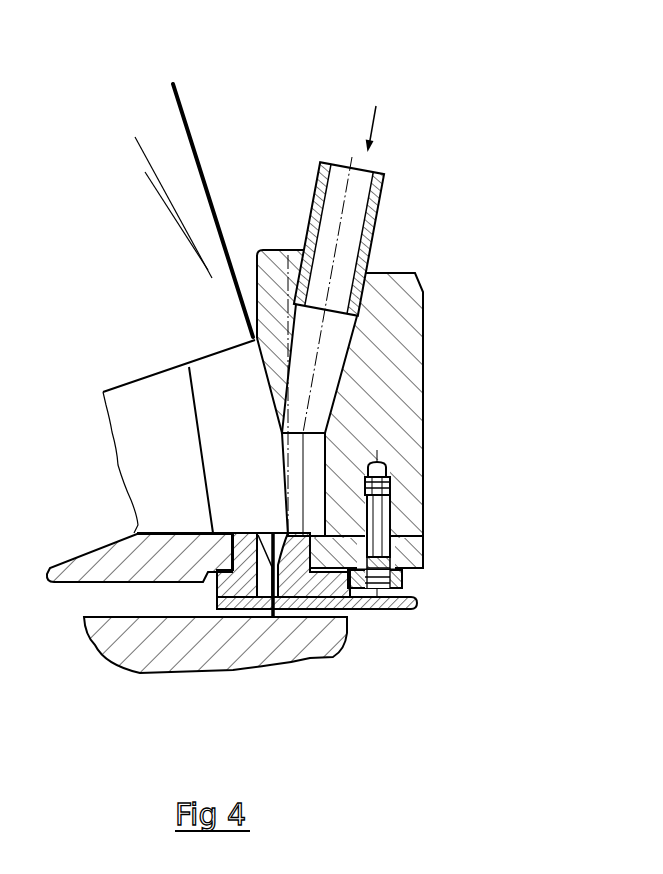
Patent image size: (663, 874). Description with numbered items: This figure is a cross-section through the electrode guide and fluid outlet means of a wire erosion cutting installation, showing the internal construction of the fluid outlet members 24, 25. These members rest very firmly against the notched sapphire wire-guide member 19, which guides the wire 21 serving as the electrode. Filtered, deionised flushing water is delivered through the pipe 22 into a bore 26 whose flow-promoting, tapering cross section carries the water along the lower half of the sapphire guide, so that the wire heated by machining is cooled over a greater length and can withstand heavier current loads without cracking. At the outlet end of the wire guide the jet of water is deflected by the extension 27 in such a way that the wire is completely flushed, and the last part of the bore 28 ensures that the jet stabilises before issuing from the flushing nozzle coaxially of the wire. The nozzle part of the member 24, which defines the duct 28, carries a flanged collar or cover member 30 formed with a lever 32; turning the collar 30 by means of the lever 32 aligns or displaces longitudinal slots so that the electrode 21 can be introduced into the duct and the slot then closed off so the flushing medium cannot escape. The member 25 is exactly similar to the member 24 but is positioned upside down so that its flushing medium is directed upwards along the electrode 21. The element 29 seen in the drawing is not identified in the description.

The notched wire-guide member 19 is at (227, 392).
The wire 21 is at (181, 100).
The pipe 22 is at (383, 197).
The fluid outlet member 24 is at (393, 386).
The fluid outlet member 25 is at (280, 341).
The bore 26 is at (325, 360).
The extension 27 is at (380, 600).
The bore 28 is at (283, 593).
The base 29 is at (142, 647).
The collar member 30 is at (233, 610).
The lever 32 is at (417, 600).